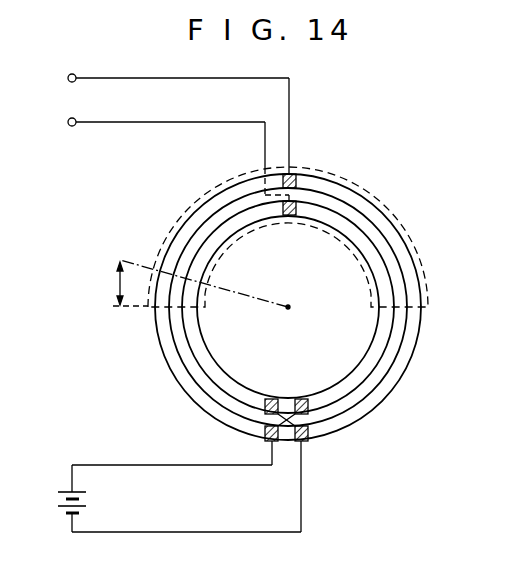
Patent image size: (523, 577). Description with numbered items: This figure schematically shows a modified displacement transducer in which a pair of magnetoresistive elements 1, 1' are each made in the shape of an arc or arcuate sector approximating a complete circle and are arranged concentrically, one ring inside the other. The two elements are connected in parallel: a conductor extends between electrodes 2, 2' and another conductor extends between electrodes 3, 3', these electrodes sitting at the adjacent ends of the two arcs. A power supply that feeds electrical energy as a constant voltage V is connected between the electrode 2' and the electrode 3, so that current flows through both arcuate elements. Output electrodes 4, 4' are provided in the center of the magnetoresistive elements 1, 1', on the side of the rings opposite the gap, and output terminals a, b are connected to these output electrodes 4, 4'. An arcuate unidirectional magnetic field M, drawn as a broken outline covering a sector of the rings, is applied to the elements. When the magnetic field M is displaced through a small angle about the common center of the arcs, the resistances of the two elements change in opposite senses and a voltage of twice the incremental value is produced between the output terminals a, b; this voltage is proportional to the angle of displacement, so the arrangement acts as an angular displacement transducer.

The magnetoresistive element 1 is at (284, 307).
The magnetoresistive element 1' is at (288, 307).
The electrode 2 is at (247, 445).
The electrode 2' is at (299, 393).
The electrode 3 is at (312, 479).
The electrode 3' is at (274, 393).
The output electrode 4 is at (307, 163).
The output electrode 4' is at (296, 228).
The magnetic field M is at (398, 223).
The center O is at (290, 321).
The constant voltage V is at (179, 498).
The output terminal a is at (168, 120).
The output terminal b is at (168, 156).